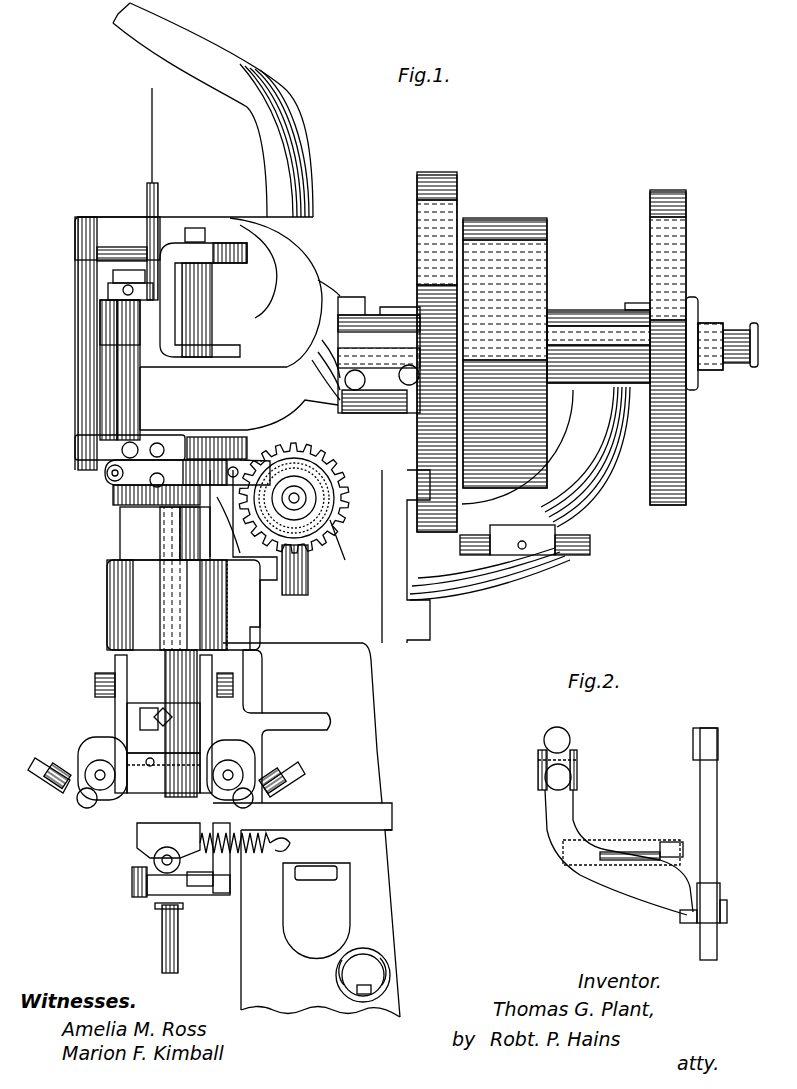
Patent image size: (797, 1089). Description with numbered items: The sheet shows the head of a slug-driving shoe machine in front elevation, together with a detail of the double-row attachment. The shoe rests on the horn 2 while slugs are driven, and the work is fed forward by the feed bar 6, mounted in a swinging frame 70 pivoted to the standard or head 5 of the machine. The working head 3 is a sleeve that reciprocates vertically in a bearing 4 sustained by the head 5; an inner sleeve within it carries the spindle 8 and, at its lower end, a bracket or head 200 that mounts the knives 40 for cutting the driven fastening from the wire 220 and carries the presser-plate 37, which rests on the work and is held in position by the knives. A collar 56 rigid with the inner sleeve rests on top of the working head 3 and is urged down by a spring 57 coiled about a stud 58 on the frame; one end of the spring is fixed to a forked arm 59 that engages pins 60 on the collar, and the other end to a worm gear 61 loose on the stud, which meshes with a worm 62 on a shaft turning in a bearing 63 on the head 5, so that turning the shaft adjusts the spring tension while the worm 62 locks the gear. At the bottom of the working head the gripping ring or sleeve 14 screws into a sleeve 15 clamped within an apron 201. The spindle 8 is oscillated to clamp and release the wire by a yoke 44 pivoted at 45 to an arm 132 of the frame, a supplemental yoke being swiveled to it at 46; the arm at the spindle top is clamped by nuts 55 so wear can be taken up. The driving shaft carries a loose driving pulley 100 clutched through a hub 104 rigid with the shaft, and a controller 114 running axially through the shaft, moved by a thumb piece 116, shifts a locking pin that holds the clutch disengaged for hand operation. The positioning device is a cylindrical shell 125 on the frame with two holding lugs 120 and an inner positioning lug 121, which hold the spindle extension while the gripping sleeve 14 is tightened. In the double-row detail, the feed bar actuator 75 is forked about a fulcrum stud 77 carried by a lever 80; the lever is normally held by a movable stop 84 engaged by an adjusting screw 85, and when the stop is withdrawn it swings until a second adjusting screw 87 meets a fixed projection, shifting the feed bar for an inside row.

In FIG. 1, the horn 2 is at (160, 935).
In FIG. 1, the working head 3 is at (120, 540).
In FIG. 1, the bearing 4 is at (145, 595).
In FIG. 1, the head of the machine 5 is at (372, 713).
In FIG. 1, the feed bar 6 is at (170, 890).
In FIG. 1, the spindle 8 is at (150, 378).
In FIG. 1, the gripping ring or sleeve 14 is at (140, 740).
In FIG. 1, the sleeve 15 is at (150, 762).
In FIG. 1, the presser-plate 37 is at (150, 840).
In FIG. 1, the knives 40 is at (110, 826).
In FIG. 1, the yoke 44 is at (148, 308).
In FIG. 1, the pivot 45 is at (75, 238).
In FIG. 1, the swivel 46 is at (200, 265).
In FIG. 1, the clamping nuts 55 is at (113, 290).
In FIG. 1, the collar 56 is at (108, 484).
In FIG. 1, the spring 57 is at (318, 578).
In FIG. 1, the stud 58 is at (300, 492).
In FIG. 1, the forked arm 59 is at (240, 462).
In FIG. 1, the pins 60 is at (118, 495).
In FIG. 1, the worm gear 61 is at (294, 537).
In FIG. 1, the worm 62 is at (314, 632).
In FIG. 1, the bearing 63 is at (277, 652).
In FIG. 1, the swinging frame 70 is at (168, 855).
In FIG. 2, the feed bar actuator 75 is at (716, 835).
In FIG. 2, the fulcrum stud 77 is at (722, 900).
In FIG. 2, the lever 80 is at (626, 880).
In FIG. 2, the movable stop 84 is at (540, 786).
In FIG. 2, the adjusting screw 85 is at (545, 775).
In FIG. 2, the adjusting screw 87 is at (568, 740).
In FIG. 1, the driving pulley 100 is at (520, 220).
In FIG. 1, the hub 104 is at (390, 310).
In FIG. 1, the controller 114 is at (705, 335).
In FIG. 1, the thumb piece 116 is at (742, 338).
In FIG. 1, the holding lugs 120 is at (340, 995).
In FIG. 1, the positioning lug 121 is at (363, 995).
In FIG. 1, the cylindrical shell 125 is at (385, 963).
In FIG. 1, the arm 132 is at (118, 230).
In FIG. 1, the bracket or head 200 is at (135, 715).
In FIG. 1, the apron 201 is at (160, 680).
In FIG. 1, the wire 220 is at (150, 130).